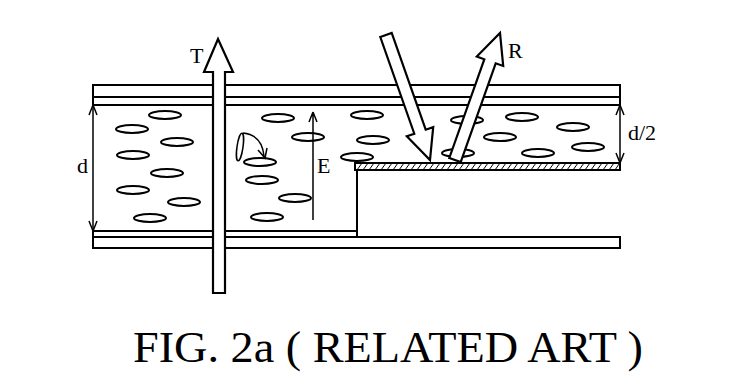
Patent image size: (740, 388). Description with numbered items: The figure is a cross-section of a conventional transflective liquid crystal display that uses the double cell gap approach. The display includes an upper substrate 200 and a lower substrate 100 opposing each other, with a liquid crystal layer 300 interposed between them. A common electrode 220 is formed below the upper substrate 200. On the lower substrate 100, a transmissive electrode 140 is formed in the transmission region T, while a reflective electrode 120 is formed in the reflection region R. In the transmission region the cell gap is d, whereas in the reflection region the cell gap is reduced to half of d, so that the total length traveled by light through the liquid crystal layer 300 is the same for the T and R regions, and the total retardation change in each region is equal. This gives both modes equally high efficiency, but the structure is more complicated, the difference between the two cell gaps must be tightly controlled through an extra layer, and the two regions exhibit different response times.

The lower substrate 100 is at (620, 243).
The reflective electrode 120 is at (620, 167).
The transmissive electrode 140 is at (93, 233).
The upper substrate 200 is at (618, 84).
The common electrode 220 is at (620, 101).
The liquid crystal layer 300 is at (548, 120).